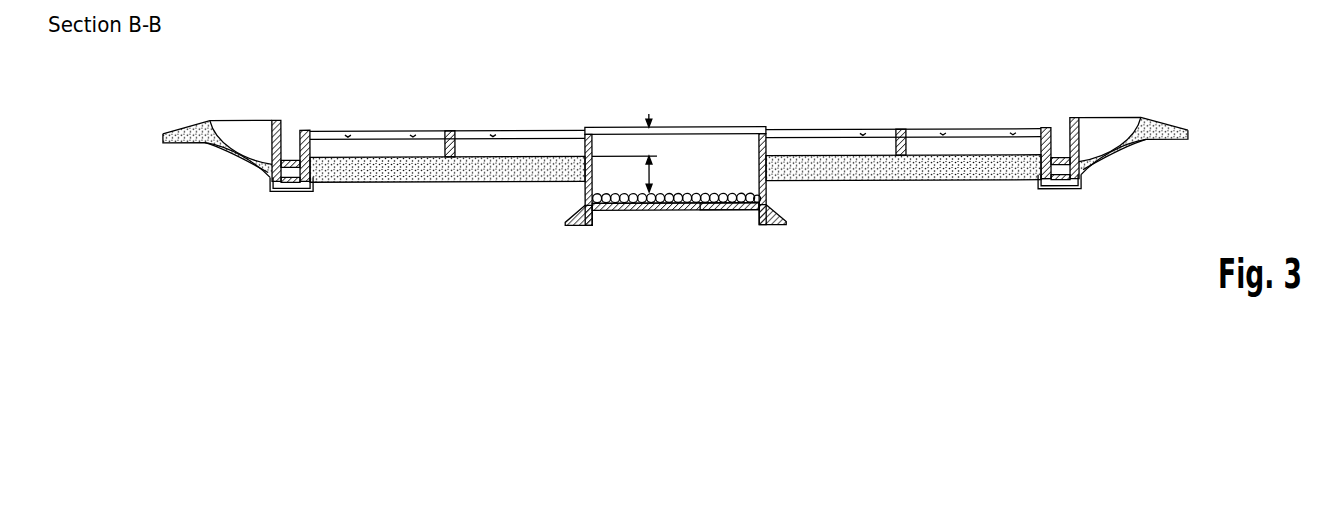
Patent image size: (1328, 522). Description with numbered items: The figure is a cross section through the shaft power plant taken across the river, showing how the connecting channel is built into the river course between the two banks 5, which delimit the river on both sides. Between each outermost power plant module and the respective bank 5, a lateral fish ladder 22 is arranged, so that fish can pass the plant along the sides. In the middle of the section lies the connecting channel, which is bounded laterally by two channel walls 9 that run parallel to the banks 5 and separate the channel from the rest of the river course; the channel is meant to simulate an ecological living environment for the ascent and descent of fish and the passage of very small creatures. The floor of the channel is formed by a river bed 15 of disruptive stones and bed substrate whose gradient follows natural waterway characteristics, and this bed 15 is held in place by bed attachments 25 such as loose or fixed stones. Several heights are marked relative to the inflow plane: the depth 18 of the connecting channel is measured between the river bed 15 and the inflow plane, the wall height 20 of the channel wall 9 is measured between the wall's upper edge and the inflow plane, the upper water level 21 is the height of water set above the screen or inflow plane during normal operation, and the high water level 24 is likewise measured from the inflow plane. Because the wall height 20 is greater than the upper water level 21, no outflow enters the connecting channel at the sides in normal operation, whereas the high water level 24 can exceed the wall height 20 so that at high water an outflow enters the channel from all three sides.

The bank 5 is at (200, 120).
The lateral fish ladder 22 is at (295, 108).
The upper water level 21 is at (507, 131).
The high water level 24 is at (565, 128).
The channel wall 9 is at (603, 130).
The wall height 20 is at (652, 145).
The depth of the connecting channel 18 is at (637, 185).
The river bed 15 is at (695, 210).
The bed attachment 25 is at (743, 210).